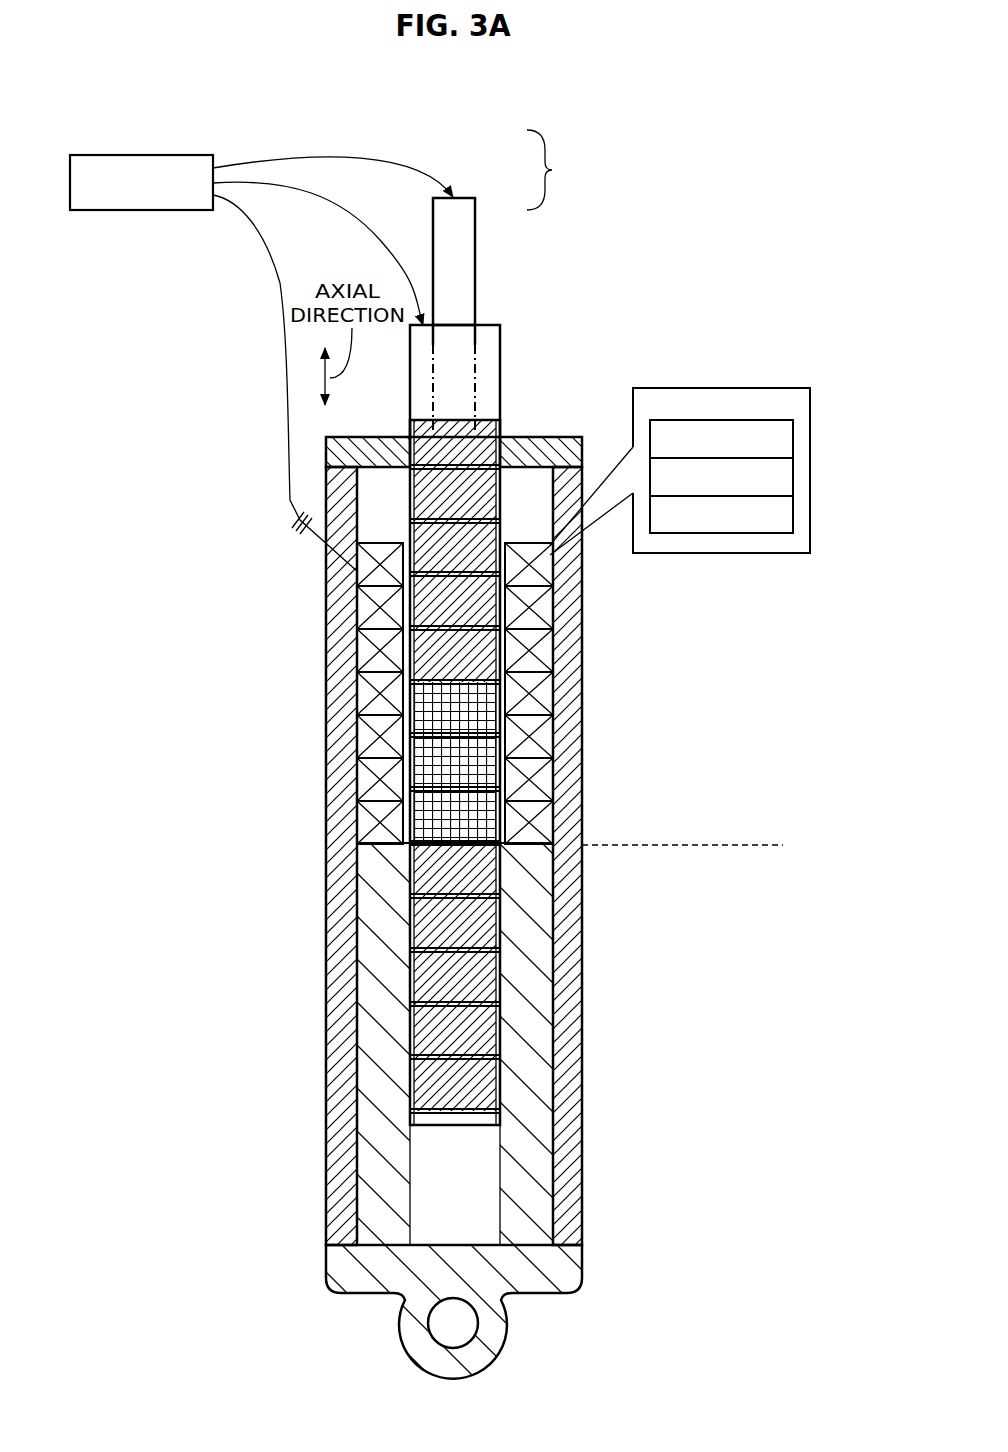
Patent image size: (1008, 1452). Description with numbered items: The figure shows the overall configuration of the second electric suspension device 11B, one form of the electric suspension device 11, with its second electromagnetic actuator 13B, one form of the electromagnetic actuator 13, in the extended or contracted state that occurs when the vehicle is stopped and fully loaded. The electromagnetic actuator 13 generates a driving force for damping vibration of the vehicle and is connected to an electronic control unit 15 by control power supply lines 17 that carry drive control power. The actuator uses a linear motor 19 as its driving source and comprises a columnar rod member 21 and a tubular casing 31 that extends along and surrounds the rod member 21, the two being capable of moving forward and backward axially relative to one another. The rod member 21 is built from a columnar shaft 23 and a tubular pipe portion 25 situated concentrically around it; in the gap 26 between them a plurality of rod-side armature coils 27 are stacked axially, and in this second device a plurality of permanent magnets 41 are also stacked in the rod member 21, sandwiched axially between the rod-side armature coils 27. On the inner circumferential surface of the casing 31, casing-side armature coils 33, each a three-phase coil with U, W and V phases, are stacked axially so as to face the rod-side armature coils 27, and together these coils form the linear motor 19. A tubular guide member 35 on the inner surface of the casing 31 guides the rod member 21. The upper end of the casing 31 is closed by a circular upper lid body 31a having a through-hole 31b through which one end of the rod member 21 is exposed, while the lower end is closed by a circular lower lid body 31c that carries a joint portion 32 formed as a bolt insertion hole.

The second electric suspension device 11B is at (556, 750).
The electric suspension device 11 is at (625, 263).
The second electromagnetic actuator 13B is at (556, 835).
The electromagnetic actuator 13 is at (537, 392).
The electronic control unit (ECU) 15 is at (170, 155).
The control power supply lines 17 is at (283, 283).
The linear motor 19 is at (383, 863).
The rod member 21 is at (559, 170).
The shaft 23 is at (480, 243).
The pipe portion 25 is at (500, 360).
The gap 26 is at (485, 325).
The rod-side armature coils 27 is at (393, 655).
The casing 31 is at (514, 874).
The upper lid body 31a is at (545, 437).
The through-hole 31b is at (410, 436).
The lower lid body 31c is at (583, 1247).
The joint portion 32 is at (453, 1323).
The casing-side armature coils 33 is at (727, 388).
The guide member 35 is at (540, 945).
The permanent magnets 41 is at (393, 823).